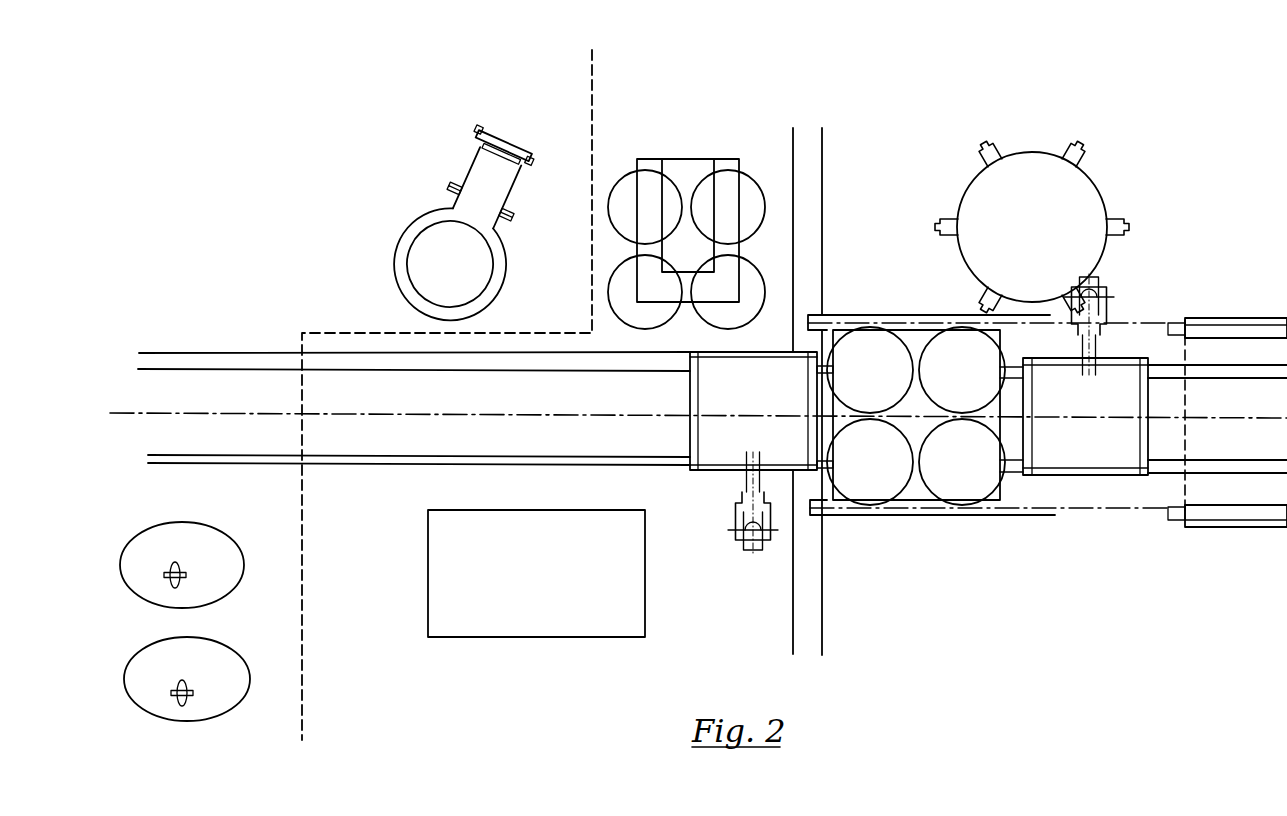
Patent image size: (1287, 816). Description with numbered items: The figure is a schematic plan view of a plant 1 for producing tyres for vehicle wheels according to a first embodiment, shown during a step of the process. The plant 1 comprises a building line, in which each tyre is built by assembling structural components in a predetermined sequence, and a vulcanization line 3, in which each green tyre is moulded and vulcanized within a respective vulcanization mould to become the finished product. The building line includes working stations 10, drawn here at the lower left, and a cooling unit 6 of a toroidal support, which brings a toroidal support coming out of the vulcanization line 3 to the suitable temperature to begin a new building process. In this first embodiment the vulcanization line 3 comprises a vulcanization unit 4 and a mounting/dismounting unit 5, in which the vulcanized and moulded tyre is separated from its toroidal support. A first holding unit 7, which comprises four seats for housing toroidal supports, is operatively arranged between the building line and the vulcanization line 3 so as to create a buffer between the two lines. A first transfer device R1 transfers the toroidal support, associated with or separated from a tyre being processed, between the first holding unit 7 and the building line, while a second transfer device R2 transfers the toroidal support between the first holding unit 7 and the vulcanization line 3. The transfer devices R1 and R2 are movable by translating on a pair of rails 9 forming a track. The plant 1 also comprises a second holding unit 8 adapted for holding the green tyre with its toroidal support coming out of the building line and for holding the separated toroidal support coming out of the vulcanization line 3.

The plant for producing tyres 1 is at (258, 94).
The vulcanization line 3 is at (928, 128).
The vulcanization unit 4 is at (1076, 205).
The mounting/dismounting unit 5 is at (685, 168).
The cooling unit 6 is at (470, 185).
The first holding unit 7 is at (913, 347).
The second holding unit 8 is at (543, 620).
The rail 9 is at (418, 437).
The working stations 10 is at (215, 543).
The first transfer device R1 is at (736, 515).
The second transfer device R2 is at (1105, 318).